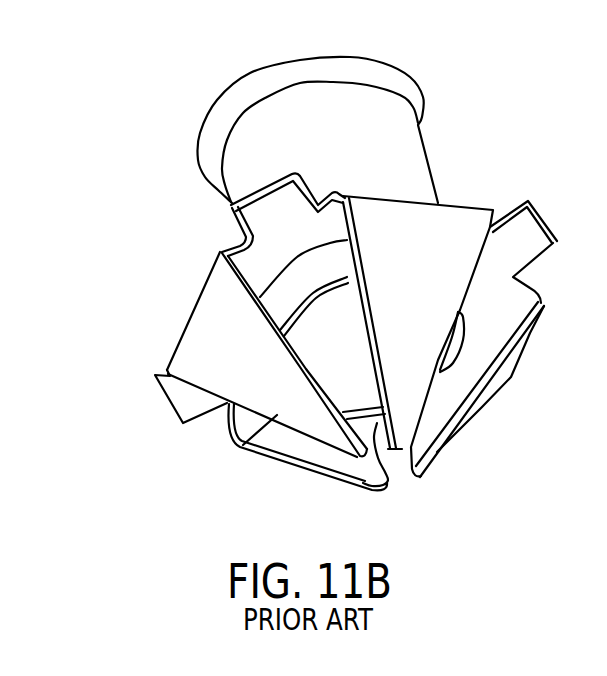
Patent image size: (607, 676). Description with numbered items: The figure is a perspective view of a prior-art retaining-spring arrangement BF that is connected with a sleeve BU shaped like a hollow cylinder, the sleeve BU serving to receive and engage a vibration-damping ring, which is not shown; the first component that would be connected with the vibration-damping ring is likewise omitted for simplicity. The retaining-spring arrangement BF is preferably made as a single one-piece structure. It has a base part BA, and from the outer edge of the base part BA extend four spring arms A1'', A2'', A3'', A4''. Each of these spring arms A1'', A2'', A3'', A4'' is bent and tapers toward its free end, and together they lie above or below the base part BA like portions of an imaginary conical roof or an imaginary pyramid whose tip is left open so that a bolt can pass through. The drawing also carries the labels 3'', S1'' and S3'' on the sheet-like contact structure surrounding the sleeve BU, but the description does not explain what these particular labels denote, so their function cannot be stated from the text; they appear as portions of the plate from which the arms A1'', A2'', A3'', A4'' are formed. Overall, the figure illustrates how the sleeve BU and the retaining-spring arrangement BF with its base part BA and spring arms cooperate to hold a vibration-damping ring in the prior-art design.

The sleeve BU is at (410, 171).
The retaining-spring arrangement BF is at (250, 208).
The base part BA is at (234, 258).
The prior art contact member 3'' is at (482, 321).
The first side portion S1'' is at (548, 222).
The third side portion S3'' is at (167, 400).
The spring arm A1'' is at (490, 391).
The spring arm A2'' is at (282, 447).
The spring arm A3'' is at (332, 480).
The spring arm A4'' is at (477, 405).